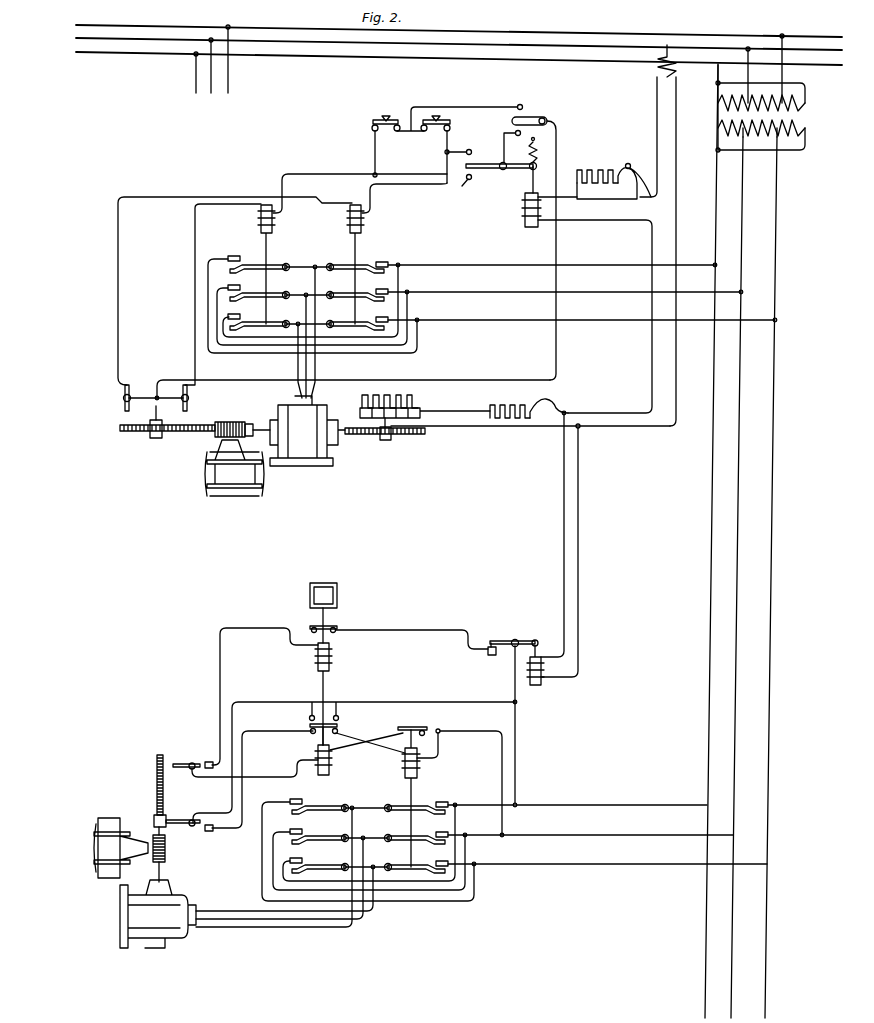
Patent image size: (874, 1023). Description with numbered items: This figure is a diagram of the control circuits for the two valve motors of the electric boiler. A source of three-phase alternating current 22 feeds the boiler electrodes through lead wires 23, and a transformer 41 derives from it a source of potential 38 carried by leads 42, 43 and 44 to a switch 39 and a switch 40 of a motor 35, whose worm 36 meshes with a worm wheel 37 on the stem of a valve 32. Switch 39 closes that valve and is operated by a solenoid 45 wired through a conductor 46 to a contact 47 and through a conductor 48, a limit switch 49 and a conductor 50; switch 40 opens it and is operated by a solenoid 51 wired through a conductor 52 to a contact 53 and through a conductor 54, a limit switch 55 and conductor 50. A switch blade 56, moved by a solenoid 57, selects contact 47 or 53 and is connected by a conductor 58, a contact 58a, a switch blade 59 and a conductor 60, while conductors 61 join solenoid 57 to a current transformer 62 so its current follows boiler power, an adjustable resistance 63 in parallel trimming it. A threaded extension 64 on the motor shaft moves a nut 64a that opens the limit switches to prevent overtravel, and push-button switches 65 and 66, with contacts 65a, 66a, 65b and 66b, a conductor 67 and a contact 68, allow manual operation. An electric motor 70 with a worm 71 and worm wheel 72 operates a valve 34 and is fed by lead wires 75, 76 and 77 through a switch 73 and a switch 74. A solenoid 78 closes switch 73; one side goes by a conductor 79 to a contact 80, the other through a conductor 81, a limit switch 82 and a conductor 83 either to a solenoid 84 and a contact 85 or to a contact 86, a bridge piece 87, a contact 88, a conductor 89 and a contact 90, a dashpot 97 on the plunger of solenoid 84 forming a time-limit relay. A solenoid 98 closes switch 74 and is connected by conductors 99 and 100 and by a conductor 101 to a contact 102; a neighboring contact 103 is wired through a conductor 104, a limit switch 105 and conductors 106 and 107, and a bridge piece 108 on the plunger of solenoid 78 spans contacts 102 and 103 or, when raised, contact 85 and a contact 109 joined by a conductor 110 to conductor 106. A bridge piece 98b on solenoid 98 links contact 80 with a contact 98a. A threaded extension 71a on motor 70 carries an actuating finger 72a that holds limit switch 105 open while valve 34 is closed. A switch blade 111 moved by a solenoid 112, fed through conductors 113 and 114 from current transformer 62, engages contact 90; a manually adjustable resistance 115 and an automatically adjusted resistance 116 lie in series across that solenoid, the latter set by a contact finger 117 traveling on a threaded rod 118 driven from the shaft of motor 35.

The source of three-phase alternating current 22 is at (327, 30).
The lead wires 23 is at (229, 77).
The valve 32 is at (228, 488).
The valve 34 is at (100, 852).
The motor 35 is at (305, 460).
The worm 36 is at (228, 421).
The worm wheel 37 is at (249, 423).
The source of potential 38 is at (770, 548).
The switch 39 is at (230, 305).
The switch 40 is at (364, 276).
The transformer 41 is at (806, 121).
The lead 42 is at (448, 264).
The lead wire 43 is at (468, 292).
The lead 44 is at (476, 322).
The solenoid 45 is at (273, 220).
The conductor 46 is at (310, 172).
The contact 47 is at (466, 182).
The conductor 48 is at (194, 248).
The limit switch 49 is at (190, 397).
The conductor 50 is at (437, 380).
The solenoid 51 is at (362, 212).
The conductor 52 is at (420, 186).
The contact 53 is at (469, 149).
The conductor 54 is at (170, 196).
The limit switch 55 is at (123, 393).
The switch blade 56 is at (486, 168).
The solenoid 57 is at (525, 200).
The conductor 58 is at (504, 132).
The contact 58a is at (521, 133).
The switch blade 59 is at (540, 114).
The conductor 60 is at (557, 160).
The conductors 61 is at (676, 118).
The current transformer 62 is at (676, 57).
The adjustable resistance 63 is at (604, 172).
The threaded extension 64 is at (136, 434).
The nut 64a is at (156, 439).
The push-button switch 65 is at (382, 119).
The contact 65a is at (371, 128).
The contact 65b is at (397, 132).
The push-button switch 66 is at (428, 118).
The contact 66a is at (451, 127).
The contact 66b is at (424, 132).
The conductor 67 is at (455, 102).
The contact 68 is at (522, 99).
The electric motor 70 is at (178, 940).
The worm 71 is at (161, 866).
The threaded extension 71a is at (163, 780).
The worm wheel 72 is at (165, 849).
The actuating finger 72a is at (156, 815).
The switch 73 is at (345, 800).
The switch 74 is at (425, 804).
The lead wire 75 is at (598, 805).
The lead wire 76 is at (616, 835).
The lead wire 77 is at (616, 864).
The solenoid 78 is at (330, 752).
The conductor 79 is at (386, 736).
The contact 80 is at (403, 727).
The conductor 81 is at (251, 776).
The limit switch 82 is at (197, 762).
The conductor 83 is at (219, 655).
The solenoid 84 is at (330, 656).
The contact 85 is at (320, 710).
The contact 86 is at (311, 627).
The bridge piece 87 is at (333, 623).
The contact 88 is at (335, 632).
The conductor 89 is at (418, 629).
The contact 90 is at (492, 657).
The dashpot 97 is at (324, 583).
The solenoid 98 is at (404, 762).
The contact 98a is at (440, 729).
The bridge piece 98b is at (423, 729).
The conductor 99 is at (440, 749).
The conductor 100 is at (503, 757).
The conductor 101 is at (370, 734).
The contact 102 is at (338, 729).
The contact 103 is at (312, 734).
The conductor 104 is at (262, 731).
The limit switch 105 is at (207, 831).
The conductor 106 is at (258, 702).
The conductor 107 is at (516, 726).
The bridge piece 108 is at (320, 722).
The contact 109 is at (340, 722).
The conductor 110 is at (337, 714).
The switch blade 111 is at (505, 640).
The solenoid 112 is at (530, 680).
The conductor 113 is at (579, 556).
The conductor 114 is at (563, 548).
The manually adjustable resistance 115 is at (505, 420).
The automatically adjusted resistance 116 is at (418, 403).
The contact finger 117 is at (384, 441).
The threaded rod 118 is at (418, 440).